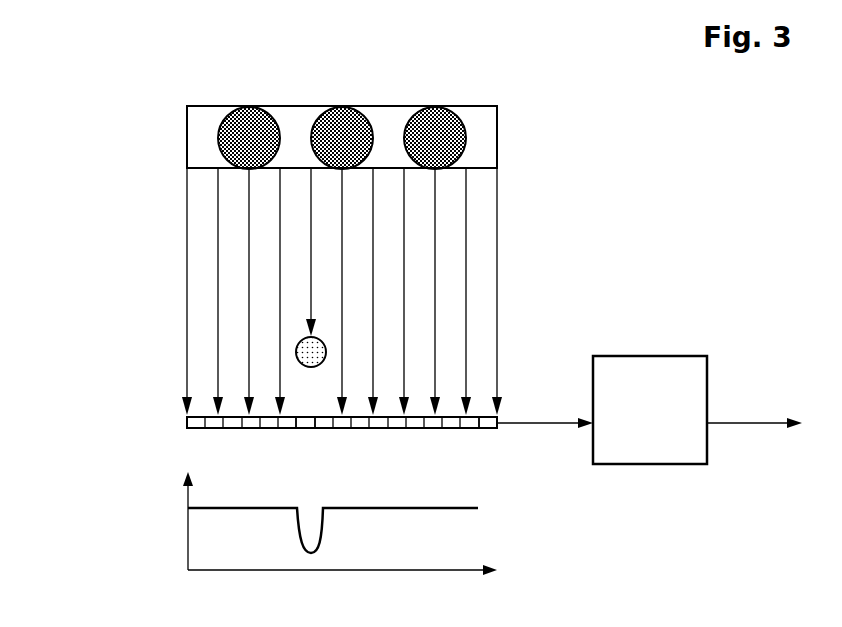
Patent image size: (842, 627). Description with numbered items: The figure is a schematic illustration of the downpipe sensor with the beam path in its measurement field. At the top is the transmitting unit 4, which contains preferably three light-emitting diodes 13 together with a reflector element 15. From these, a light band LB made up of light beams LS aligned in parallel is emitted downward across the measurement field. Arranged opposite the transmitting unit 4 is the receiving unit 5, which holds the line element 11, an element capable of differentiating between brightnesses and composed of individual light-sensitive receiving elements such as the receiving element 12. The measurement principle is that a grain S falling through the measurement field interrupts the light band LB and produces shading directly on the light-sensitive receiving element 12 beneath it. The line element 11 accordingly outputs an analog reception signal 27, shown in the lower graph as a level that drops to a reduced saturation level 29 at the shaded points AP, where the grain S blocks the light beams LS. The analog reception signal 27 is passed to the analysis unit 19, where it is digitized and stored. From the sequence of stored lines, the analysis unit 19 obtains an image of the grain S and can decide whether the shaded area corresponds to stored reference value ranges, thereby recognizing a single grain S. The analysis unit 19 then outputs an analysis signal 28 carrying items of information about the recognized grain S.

The transmitting unit 4 is at (153, 137).
The light-emitting diodes 13 is at (466, 139).
The reflector element 15 is at (498, 168).
The light band LB is at (153, 258).
The light beams LS is at (498, 313).
The grain S is at (296, 352).
The receiving unit 5 is at (153, 426).
The light-sensitive receiving element 12 is at (307, 428).
The line element 11 is at (497, 428).
The analog reception signal 27 is at (545, 408).
The analysis unit 19 is at (650, 410).
The analysis signal 28 is at (754, 408).
The reduced saturation level 29 is at (313, 526).
The shaded points AP is at (340, 538).